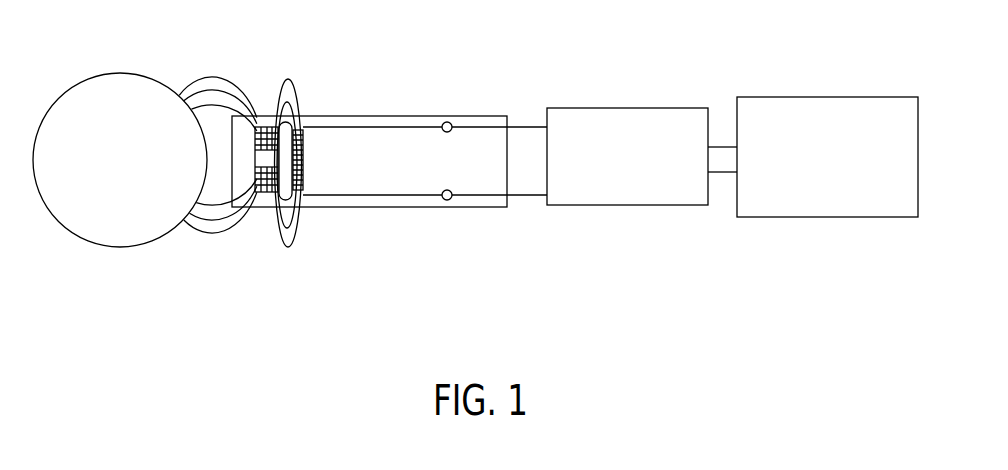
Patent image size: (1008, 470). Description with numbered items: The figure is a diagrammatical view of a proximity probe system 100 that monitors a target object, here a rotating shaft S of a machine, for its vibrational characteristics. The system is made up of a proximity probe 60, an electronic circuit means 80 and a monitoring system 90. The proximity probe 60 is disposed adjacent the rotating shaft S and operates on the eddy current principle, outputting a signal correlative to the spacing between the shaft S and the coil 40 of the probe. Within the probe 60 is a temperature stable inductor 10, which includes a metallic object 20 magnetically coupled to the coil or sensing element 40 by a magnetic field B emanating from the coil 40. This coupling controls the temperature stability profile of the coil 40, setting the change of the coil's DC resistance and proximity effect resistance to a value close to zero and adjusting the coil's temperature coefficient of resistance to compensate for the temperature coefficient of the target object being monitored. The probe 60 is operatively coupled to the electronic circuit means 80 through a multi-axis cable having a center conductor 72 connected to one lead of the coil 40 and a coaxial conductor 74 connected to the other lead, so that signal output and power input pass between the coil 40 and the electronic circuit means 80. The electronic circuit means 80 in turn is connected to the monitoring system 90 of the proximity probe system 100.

The temperature stable inductor 10 is at (336, 78).
The metallic object 20 is at (310, 172).
The coil 40 is at (250, 172).
The proximity probe 60 is at (423, 207).
The center conductor 72 is at (520, 124).
The coaxial conductor 74 is at (518, 200).
The electronic circuit means 80 is at (608, 196).
The monitoring system 90 is at (811, 201).
The proximity probe system 100 is at (656, 260).
The magnetic field B is at (276, 63).
The rotating shaft S is at (133, 175).